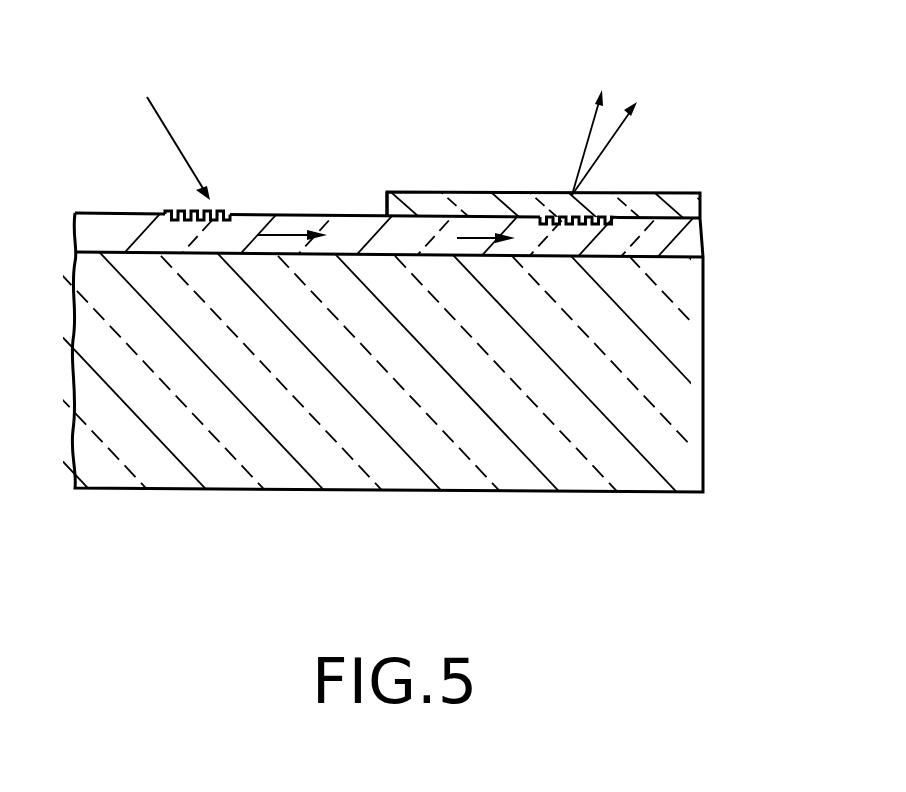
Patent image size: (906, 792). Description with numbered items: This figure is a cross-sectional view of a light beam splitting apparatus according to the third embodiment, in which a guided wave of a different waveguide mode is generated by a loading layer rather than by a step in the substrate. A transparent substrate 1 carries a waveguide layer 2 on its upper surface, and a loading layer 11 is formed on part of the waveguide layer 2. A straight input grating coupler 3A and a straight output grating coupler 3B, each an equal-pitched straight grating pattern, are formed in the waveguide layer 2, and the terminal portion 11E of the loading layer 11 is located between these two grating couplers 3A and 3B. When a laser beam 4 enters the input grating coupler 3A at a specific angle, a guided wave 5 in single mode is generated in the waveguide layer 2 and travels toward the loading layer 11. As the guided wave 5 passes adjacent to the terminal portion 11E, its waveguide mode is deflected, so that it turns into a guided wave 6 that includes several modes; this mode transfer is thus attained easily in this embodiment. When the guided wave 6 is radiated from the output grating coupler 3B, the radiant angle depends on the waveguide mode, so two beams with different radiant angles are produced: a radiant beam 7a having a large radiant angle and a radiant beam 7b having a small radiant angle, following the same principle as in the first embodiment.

The transparent substrate 1 is at (675, 348).
The waveguide layer 2 is at (678, 248).
The loading layer 11 is at (680, 208).
The terminal portion of the loading layer 11E is at (386, 204).
The straight input grating coupler 3A is at (229, 207).
The straight output grating coupler 3B is at (615, 208).
The laser beam 4 is at (178, 140).
The guided wave 5 is at (287, 217).
The guided wave 6 is at (490, 215).
The radiant beam 7a is at (627, 125).
The radiant beam 7b is at (595, 115).